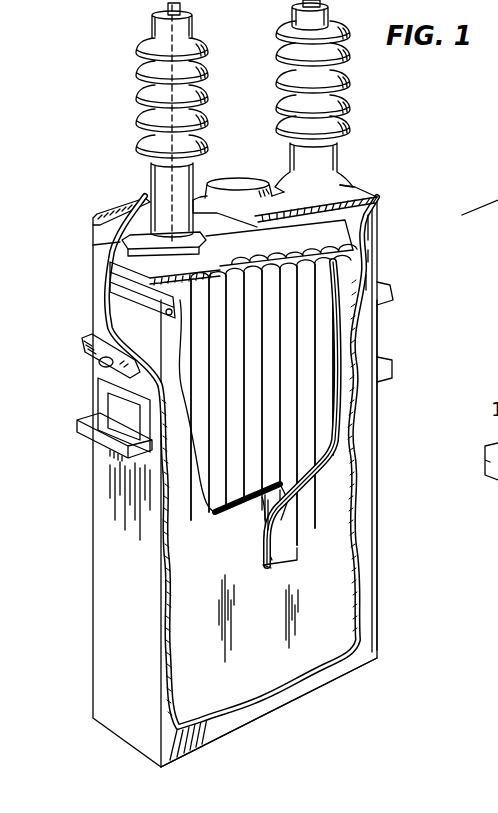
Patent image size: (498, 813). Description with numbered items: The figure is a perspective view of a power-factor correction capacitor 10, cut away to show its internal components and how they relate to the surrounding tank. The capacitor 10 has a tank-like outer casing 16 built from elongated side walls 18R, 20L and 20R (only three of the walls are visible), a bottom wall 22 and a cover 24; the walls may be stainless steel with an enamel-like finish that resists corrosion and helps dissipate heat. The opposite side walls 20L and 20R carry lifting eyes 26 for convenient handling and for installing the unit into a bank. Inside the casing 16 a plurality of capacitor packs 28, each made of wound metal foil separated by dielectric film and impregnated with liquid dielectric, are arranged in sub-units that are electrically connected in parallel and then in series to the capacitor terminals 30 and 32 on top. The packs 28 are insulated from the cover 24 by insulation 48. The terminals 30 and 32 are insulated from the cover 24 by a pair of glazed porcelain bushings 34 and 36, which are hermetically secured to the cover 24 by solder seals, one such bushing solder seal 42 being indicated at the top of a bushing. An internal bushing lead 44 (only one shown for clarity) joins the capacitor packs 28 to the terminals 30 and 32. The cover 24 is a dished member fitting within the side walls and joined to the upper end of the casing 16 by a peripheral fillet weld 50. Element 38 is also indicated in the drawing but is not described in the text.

The capacitor 10 is at (66, 680).
The outer casing 16 is at (378, 655).
The side wall 18R is at (366, 560).
The side wall 20L is at (147, 637).
The side wall 20R is at (380, 612).
The bottom wall 22 is at (273, 712).
The cover 24 is at (362, 166).
The lifting eyes 26 is at (100, 435).
The capacitor packs 28 is at (302, 319).
The capacitor terminal 30 is at (330, 8).
The capacitor terminal 32 is at (180, 9).
The bushing 34 is at (280, 105).
The bushing 36 is at (140, 125).
The conduit tube 38 is at (327, 457).
The bushing solder seal 42 is at (345, 30).
The internal bushing lead 44 is at (120, 247).
The insulation 48 is at (265, 249).
The peripheral fillet weld 50 is at (380, 205).